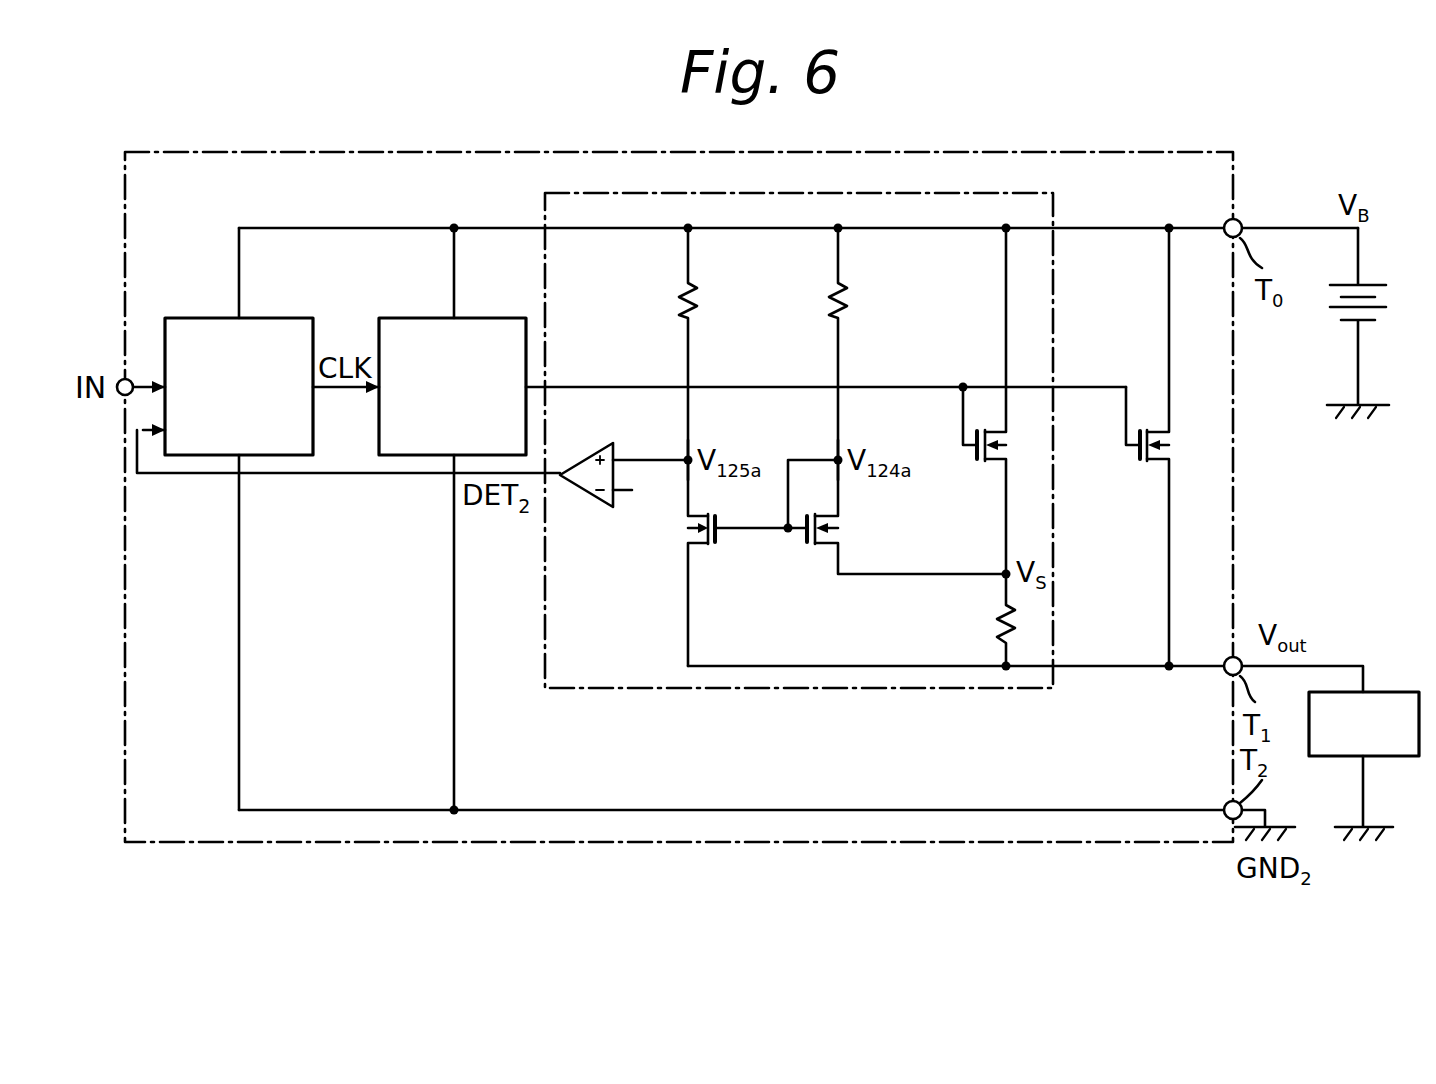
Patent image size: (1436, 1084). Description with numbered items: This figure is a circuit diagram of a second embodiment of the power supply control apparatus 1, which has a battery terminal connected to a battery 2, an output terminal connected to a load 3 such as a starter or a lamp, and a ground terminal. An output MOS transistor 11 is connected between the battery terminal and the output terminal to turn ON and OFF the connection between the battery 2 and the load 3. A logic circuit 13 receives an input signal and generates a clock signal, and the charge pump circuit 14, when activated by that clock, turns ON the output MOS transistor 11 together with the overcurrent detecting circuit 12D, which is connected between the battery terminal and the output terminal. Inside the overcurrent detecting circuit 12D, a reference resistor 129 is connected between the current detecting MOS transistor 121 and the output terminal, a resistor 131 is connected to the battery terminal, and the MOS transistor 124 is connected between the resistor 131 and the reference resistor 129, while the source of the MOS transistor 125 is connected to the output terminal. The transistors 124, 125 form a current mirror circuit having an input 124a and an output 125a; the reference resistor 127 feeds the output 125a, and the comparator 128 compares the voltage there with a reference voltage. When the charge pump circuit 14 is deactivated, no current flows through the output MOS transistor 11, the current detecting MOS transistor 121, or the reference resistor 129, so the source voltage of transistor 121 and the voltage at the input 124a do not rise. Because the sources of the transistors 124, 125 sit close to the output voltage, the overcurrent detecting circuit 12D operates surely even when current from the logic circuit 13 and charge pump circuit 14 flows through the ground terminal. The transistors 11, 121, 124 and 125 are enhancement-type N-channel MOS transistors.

The power supply control apparatus 1 is at (1060, 152).
The battery 2 is at (1385, 302).
The load 3 is at (1382, 692).
The output MOS transistor 11 is at (1160, 463).
The overcurrent detecting circuit 12D is at (1015, 193).
The logic circuit 13 is at (270, 318).
The charge pump circuit 14 is at (473, 318).
The current detecting MOS transistor 121 is at (997, 461).
The MOS transistor 124 is at (838, 533).
The input of the current mirror circuit 124a is at (841, 466).
The MOS transistor 125 is at (700, 545).
The output of the current mirror circuit 125a is at (691, 466).
The reference resistor 127 is at (700, 298).
The comparator 128 is at (588, 497).
The reference resistor 129 is at (998, 612).
The resistor 131 is at (850, 298).